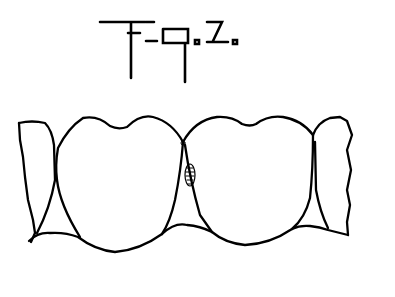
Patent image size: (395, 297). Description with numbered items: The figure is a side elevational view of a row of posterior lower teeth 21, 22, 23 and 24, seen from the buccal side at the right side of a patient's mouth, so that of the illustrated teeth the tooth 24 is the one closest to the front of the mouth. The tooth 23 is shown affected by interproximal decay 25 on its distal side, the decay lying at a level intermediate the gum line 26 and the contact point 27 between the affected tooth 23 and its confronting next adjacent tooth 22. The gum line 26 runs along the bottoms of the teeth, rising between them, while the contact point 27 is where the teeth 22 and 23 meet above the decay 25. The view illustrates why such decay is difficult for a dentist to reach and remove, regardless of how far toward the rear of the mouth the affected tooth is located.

The posterior tooth 21 is at (35, 235).
The next adjacent tooth 22 is at (115, 238).
The affected tooth 23 is at (248, 231).
The posterior tooth 24 is at (333, 221).
The interproximal decay 25 is at (196, 178).
The gum line 26 is at (187, 238).
The contact point 27 is at (183, 143).